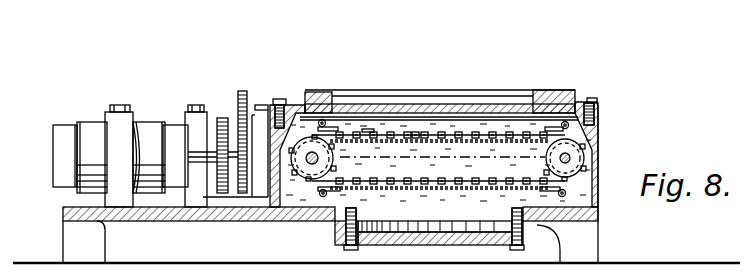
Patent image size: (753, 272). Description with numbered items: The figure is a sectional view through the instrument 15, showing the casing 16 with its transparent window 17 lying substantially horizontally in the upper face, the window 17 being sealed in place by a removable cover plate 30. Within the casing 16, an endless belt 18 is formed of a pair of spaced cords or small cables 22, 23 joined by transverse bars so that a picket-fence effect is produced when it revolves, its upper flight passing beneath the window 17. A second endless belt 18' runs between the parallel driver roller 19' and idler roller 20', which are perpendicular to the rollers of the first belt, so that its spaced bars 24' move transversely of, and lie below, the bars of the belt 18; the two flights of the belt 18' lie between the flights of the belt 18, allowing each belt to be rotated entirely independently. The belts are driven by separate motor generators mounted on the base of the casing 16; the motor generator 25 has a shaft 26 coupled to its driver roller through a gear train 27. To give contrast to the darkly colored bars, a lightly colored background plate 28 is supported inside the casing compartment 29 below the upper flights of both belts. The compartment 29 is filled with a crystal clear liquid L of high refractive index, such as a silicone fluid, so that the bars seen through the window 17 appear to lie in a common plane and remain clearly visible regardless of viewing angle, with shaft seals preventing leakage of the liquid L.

The instrument 15 is at (426, 78).
The casing 16 is at (598, 152).
The transparent window 17 is at (520, 103).
The endless belt 18 is at (438, 104).
The second endless belt 18' is at (437, 105).
The driver roller 19' is at (308, 188).
The idler roller 20' is at (589, 160).
The cord 22 is at (580, 123).
The cord 23 is at (322, 119).
The spaced bars 24' is at (377, 102).
The motor generator 25 is at (91, 110).
The shaft 26 is at (205, 163).
The gear train 27 is at (226, 103).
The background plate 28 is at (469, 146).
The casing compartment 29 is at (589, 183).
The removable cover plate 30 is at (290, 127).
The liquid L is at (583, 200).